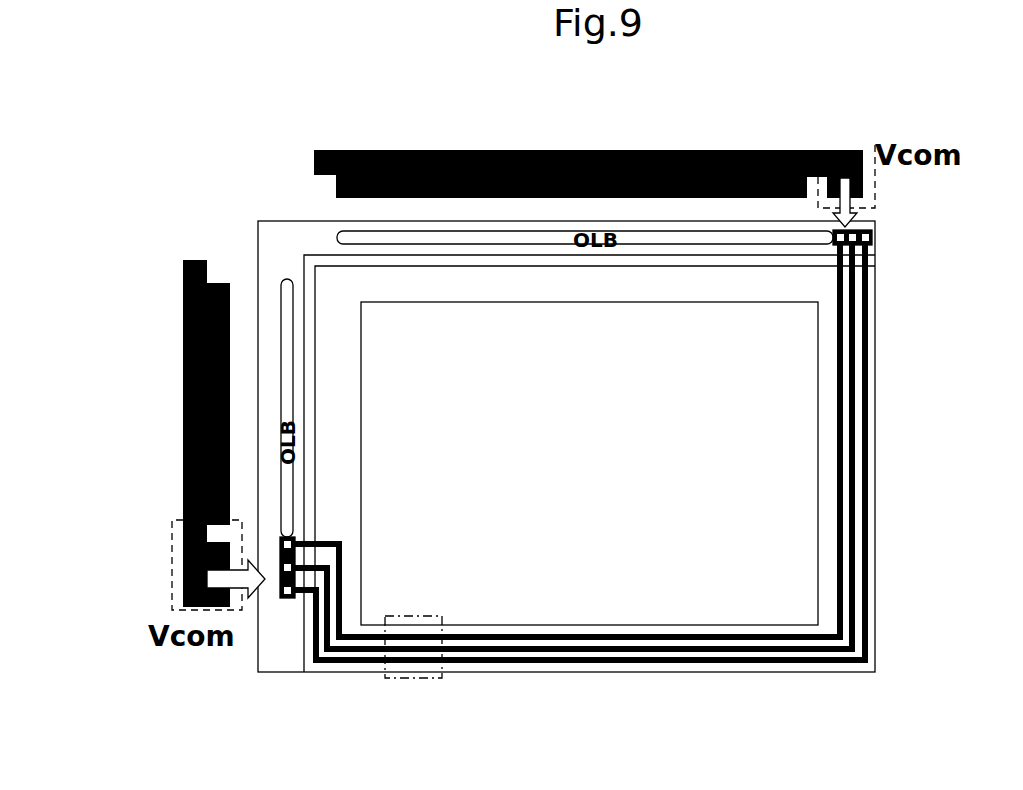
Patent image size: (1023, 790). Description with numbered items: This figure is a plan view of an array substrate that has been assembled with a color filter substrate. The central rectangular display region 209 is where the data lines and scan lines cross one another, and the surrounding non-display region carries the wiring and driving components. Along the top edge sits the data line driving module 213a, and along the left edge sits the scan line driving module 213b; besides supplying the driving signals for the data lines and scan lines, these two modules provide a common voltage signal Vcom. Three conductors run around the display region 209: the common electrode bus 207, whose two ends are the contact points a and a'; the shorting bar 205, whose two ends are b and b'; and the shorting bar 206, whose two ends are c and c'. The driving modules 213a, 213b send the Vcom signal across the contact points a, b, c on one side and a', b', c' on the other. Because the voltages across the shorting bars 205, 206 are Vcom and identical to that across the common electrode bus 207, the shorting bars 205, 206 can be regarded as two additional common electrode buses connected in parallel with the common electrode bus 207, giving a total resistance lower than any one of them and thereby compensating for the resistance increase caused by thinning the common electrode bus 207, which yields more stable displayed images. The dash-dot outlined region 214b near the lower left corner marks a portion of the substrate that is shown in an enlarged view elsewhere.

The shorting bar 205 is at (858, 422).
The shorting bar 206 is at (866, 487).
The common electrode bus 207 is at (843, 357).
The display region 209 is at (657, 540).
The data line driving module 213a is at (481, 152).
The scan line driving module 213b is at (183, 443).
The region 214b is at (404, 690).
The contact point a is at (199, 500).
The end of shorting bar b is at (199, 523).
The end of shorting bar c is at (244, 647).
The contact point a' is at (793, 160).
The end of shorting bar b' is at (918, 207).
The end of shorting bar c' is at (923, 231).